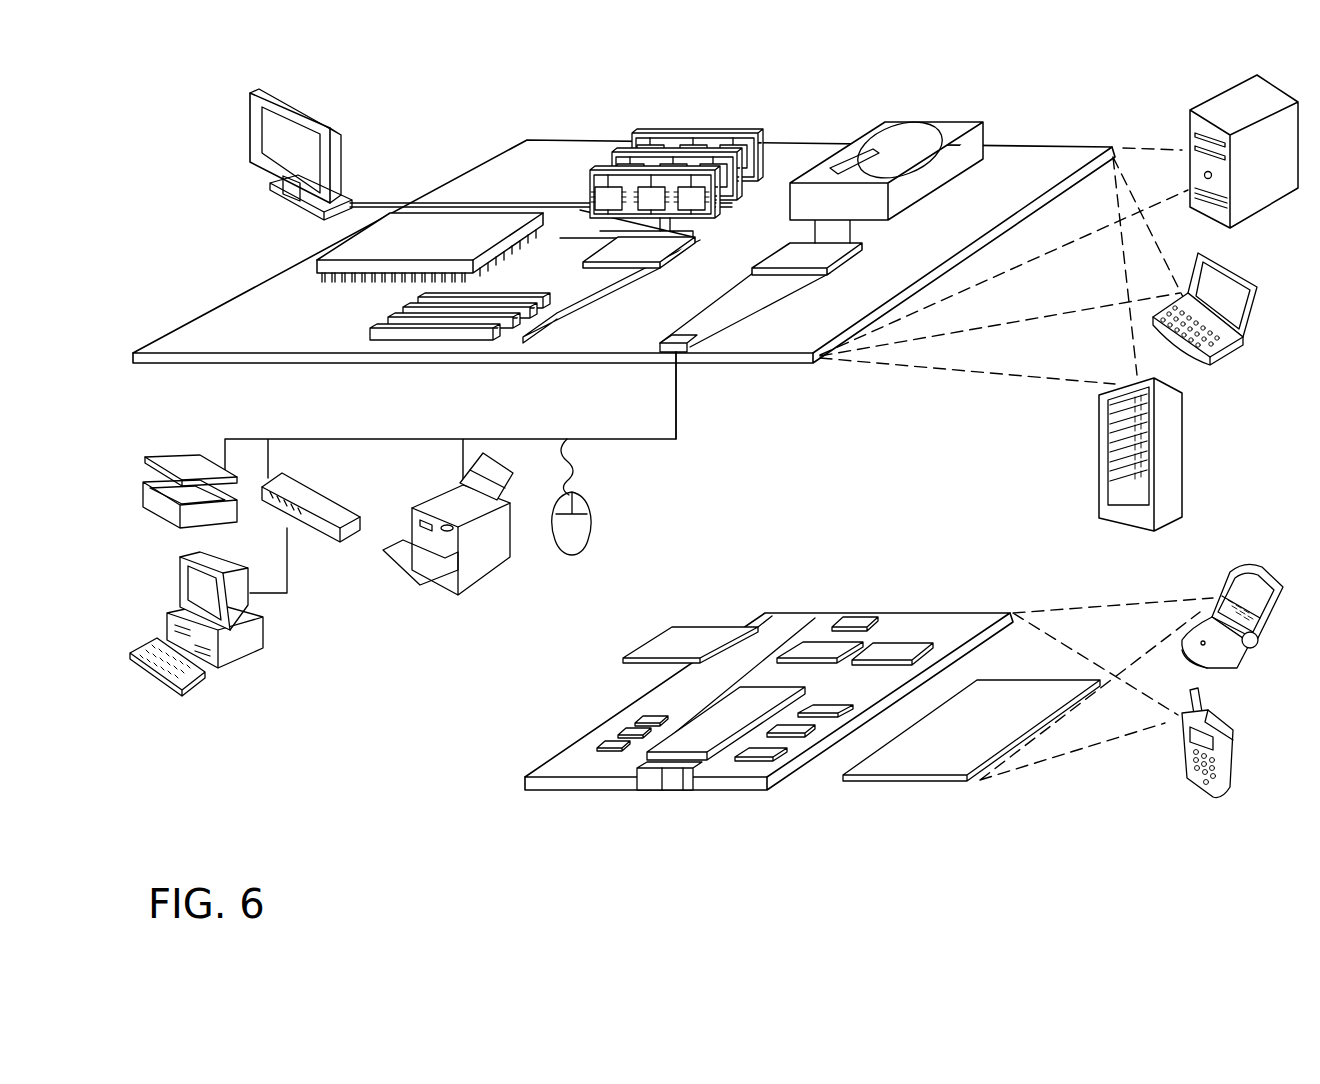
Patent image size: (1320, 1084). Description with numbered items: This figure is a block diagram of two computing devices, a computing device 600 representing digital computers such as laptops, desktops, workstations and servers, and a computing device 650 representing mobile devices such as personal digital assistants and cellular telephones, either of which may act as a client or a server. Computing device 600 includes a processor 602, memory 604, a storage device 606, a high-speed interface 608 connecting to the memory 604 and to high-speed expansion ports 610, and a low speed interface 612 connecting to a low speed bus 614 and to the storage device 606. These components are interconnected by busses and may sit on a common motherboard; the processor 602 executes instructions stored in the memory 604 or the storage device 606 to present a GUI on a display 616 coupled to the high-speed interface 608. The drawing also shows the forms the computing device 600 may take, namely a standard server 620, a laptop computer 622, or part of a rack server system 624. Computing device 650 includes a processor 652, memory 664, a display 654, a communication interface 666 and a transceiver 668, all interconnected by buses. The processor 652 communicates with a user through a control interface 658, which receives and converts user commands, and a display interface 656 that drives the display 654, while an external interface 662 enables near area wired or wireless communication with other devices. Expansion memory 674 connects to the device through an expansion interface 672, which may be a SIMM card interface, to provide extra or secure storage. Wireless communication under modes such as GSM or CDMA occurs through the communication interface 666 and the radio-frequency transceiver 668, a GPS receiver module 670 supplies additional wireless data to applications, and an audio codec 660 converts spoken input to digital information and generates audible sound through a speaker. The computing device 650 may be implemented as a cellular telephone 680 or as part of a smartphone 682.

The computing device 600 is at (445, 113).
The processor 602 is at (320, 265).
The memory 604 is at (648, 165).
The storage device 606 is at (878, 128).
The high-speed interface 608 is at (623, 247).
The high-speed expansion ports 610 is at (393, 323).
The low speed interface 612 is at (800, 260).
The low speed bus 614 is at (683, 355).
The display 616 is at (256, 88).
The standard server 620 is at (1190, 127).
The laptop computer 622 is at (1255, 287).
The rack server system 624 is at (1099, 479).
The computing device 650 is at (490, 796).
The processor 652 is at (700, 745).
The display 654 is at (935, 765).
The display interface 656 is at (768, 753).
The control interface 658 is at (800, 727).
The audio codec 660 is at (827, 710).
The external interface 662 is at (665, 790).
The memory 664 is at (617, 734).
The communication interface 666 is at (817, 650).
The transceiver 668 is at (897, 652).
The GPS receiver module 670 is at (870, 616).
The expansion interface 672 is at (755, 624).
The expansion memory 674 is at (672, 627).
The cellular telephone 680 is at (1228, 573).
The smartphone 682 is at (1183, 753).